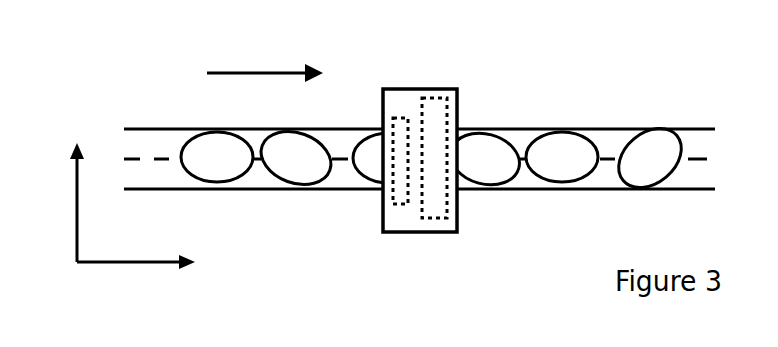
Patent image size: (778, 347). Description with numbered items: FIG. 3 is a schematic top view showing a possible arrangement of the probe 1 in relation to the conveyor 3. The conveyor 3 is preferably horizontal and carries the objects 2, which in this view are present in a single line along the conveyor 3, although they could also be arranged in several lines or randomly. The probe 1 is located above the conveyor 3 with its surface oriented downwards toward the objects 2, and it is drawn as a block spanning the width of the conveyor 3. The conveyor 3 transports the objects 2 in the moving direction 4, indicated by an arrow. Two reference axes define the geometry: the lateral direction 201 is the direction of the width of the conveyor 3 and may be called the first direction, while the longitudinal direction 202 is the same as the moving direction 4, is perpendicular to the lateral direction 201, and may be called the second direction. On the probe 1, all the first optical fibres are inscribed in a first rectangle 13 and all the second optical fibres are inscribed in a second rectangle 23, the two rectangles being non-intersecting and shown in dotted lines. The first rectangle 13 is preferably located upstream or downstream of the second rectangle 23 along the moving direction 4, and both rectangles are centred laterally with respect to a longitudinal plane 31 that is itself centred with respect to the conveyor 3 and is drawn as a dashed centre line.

The probe 1 is at (457, 107).
The objects 2 is at (562, 145).
The conveyor 3 is at (188, 105).
The moving direction 4 is at (290, 72).
The first rectangle 13 is at (403, 118).
The second rectangle 23 is at (442, 112).
The longitudinal plane 31 is at (157, 157).
The lateral direction 201 is at (75, 180).
The longitudinal direction 202 is at (137, 265).